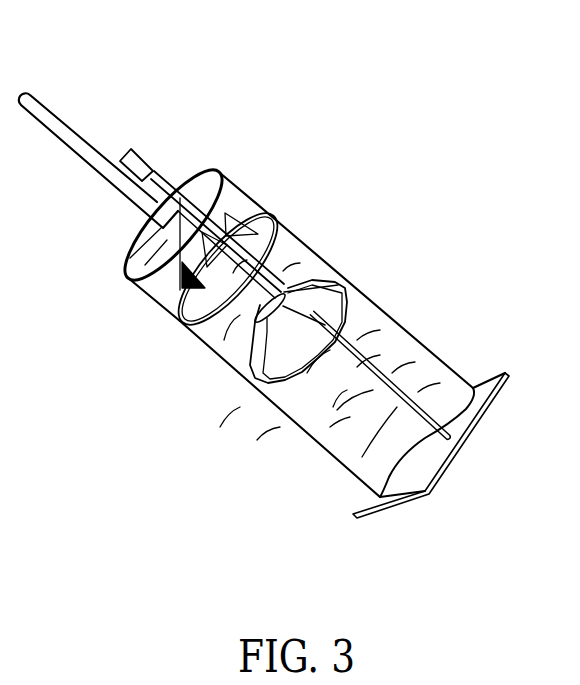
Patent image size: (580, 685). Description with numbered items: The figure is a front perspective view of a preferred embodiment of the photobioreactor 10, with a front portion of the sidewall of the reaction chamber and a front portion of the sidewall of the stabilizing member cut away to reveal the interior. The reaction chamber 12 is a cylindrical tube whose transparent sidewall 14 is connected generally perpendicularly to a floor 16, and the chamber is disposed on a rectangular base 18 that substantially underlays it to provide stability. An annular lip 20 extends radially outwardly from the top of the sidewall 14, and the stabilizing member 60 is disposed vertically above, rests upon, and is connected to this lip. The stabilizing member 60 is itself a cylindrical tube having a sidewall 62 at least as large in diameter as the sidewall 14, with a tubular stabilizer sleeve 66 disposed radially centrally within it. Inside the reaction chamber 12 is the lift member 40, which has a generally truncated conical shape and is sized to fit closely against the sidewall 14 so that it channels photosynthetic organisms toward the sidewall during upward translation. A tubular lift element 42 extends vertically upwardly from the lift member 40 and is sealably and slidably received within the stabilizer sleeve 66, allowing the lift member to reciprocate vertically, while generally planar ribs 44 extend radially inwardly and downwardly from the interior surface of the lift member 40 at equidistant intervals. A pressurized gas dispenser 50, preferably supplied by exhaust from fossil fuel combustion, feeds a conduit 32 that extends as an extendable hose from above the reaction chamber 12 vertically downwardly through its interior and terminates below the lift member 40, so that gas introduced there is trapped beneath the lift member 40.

The photobioreactor 10 is at (435, 111).
The reaction chamber 12 is at (335, 416).
The sidewall 14 is at (292, 412).
The floor 16 is at (410, 465).
The base 18 is at (487, 383).
The annular lip 20 is at (277, 220).
The conduit 32 is at (174, 187).
The lift member 40 is at (245, 337).
The lift element 42 is at (289, 278).
The ribs 44 is at (262, 370).
The pressurized gas dispenser 50 is at (141, 158).
The stabilizing member 60 is at (250, 184).
The sidewall 62 is at (153, 300).
The stabilizer sleeve 66 is at (66, 132).